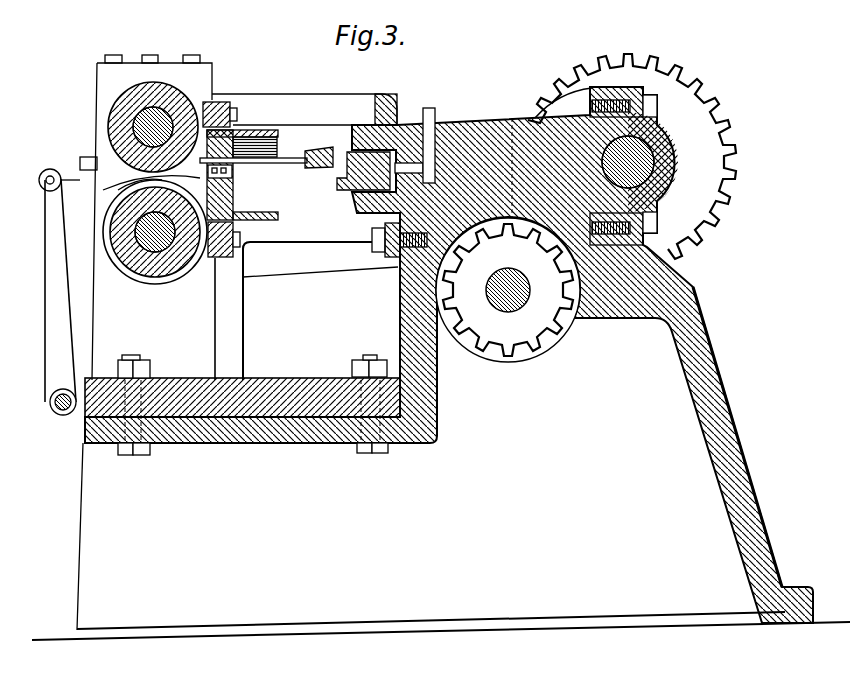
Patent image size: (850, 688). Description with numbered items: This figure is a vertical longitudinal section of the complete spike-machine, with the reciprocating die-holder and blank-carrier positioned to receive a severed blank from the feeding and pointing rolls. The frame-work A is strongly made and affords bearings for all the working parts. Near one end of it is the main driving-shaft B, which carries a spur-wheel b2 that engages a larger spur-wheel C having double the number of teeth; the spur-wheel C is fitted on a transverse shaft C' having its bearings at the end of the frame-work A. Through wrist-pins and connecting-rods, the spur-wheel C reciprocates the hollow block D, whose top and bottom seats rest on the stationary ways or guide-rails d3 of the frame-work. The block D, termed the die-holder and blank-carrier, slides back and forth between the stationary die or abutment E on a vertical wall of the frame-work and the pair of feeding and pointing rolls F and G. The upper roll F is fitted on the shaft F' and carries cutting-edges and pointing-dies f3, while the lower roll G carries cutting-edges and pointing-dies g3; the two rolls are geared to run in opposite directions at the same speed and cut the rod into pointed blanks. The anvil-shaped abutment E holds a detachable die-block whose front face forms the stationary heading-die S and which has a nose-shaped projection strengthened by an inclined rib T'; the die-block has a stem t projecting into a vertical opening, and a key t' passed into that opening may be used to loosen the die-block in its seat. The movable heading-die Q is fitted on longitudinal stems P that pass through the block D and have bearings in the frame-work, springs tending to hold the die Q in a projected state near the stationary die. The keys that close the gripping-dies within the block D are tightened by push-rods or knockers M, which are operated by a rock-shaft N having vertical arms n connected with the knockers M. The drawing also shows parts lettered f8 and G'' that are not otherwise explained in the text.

The frame-work A is at (441, 363).
The main driving-shaft B is at (504, 268).
The spur-wheel b2 is at (508, 290).
The spur-wheel C is at (632, 156).
The transverse shaft C' is at (657, 162).
The reciprocating hollow block D is at (233, 197).
The longitudinal stems P is at (268, 148).
The stationary die or abutment E is at (272, 142).
The inclined rib T' is at (319, 171).
The movable heading-die Q is at (306, 165).
The stationary heading-die S is at (345, 191).
The stem t is at (409, 129).
The key t' is at (440, 134).
The stationary ways or guide-rails d3 is at (319, 237).
The upper feeding and pointing roll F is at (153, 102).
The roll shaft F' is at (107, 127).
The roller housing f8 is at (112, 110).
The cutting-edges and pointing-dies f3 is at (208, 100).
The lower feeding and pointing roll G is at (155, 251).
The roller ring G'' is at (153, 240).
The cutting-edges and pointing-dies g3 is at (200, 288).
The push-rods or knockers M is at (72, 178).
The vertical arms n is at (60, 290).
The rock-shaft N is at (50, 398).